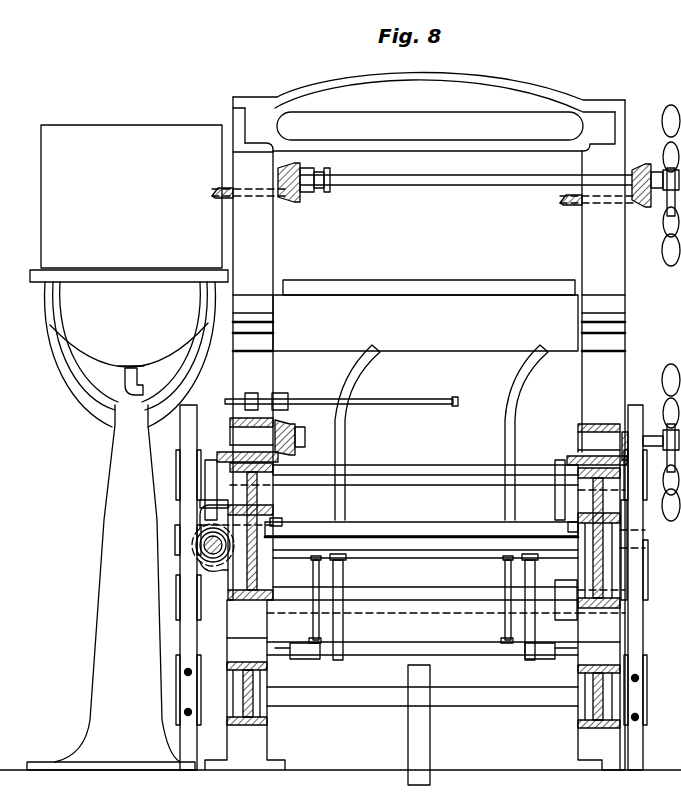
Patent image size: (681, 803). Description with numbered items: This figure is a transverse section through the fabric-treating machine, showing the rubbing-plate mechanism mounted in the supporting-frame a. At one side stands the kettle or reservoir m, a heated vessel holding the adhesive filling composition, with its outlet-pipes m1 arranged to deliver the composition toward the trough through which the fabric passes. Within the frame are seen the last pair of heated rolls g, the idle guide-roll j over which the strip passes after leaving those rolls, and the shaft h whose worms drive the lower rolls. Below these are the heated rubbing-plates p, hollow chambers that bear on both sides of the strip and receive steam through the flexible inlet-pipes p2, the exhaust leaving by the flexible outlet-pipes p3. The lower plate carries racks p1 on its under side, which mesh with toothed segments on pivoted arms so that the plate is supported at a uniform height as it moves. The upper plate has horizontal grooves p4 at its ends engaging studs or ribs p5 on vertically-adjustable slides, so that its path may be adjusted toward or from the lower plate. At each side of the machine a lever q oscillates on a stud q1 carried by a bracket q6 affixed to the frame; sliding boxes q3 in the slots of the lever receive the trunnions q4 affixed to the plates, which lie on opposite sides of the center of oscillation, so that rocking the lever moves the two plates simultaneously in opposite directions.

The supporting-frame a is at (628, 378).
The kettle or reservoir m is at (52, 208).
The outlet-pipes m1 is at (314, 398).
The idle guide-roll j is at (323, 308).
The rolls g is at (404, 292).
The shaft h is at (198, 550).
The heated rubbing-plates p is at (180, 718).
The racks p1 is at (320, 565).
The flexible inlet-pipes p2 is at (355, 378).
The flexible outlet-pipes p3 is at (520, 372).
The horizontal grooves p4 is at (280, 522).
The studs or ribs p5 is at (570, 520).
The lever q is at (180, 515).
The stud q1 is at (178, 540).
The sliding boxes q3 is at (178, 467).
The trunnions q4 is at (212, 480).
The brackets q6 is at (200, 507).